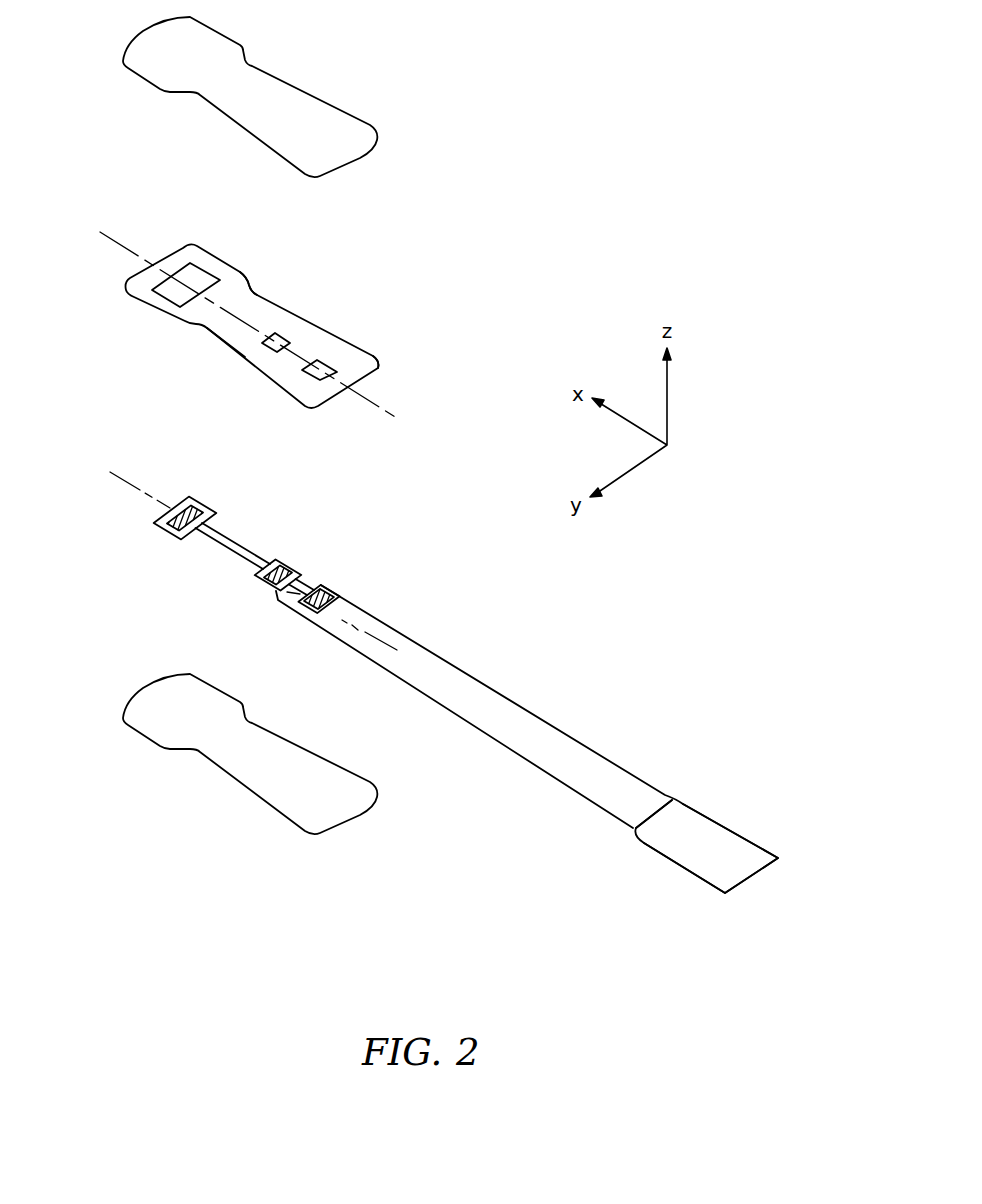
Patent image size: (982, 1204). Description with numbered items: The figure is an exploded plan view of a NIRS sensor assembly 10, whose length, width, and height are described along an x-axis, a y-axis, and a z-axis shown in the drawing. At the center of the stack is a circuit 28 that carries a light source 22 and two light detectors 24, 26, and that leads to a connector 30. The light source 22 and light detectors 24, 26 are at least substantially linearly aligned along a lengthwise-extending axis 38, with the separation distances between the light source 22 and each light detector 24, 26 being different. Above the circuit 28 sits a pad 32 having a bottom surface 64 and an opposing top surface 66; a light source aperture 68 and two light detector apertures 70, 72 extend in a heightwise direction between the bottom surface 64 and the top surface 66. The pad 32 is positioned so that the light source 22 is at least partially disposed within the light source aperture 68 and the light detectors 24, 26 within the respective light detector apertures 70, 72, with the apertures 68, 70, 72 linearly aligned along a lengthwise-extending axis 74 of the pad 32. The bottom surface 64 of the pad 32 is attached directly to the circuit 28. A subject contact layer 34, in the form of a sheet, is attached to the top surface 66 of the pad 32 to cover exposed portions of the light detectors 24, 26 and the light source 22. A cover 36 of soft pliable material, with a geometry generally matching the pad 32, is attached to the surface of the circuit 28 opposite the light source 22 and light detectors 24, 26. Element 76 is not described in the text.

The NIRS sensor assembly 10 is at (535, 130).
The light source 22 is at (327, 593).
The light detector 24 is at (278, 563).
The light detector 26 is at (177, 538).
The circuit 28 is at (538, 767).
The connector 30 is at (708, 818).
The pad 32 is at (308, 322).
The subject contact layer 34 is at (367, 153).
The cover 36 is at (347, 823).
The lengthwise-extending axis 38 is at (120, 482).
The bottom surface 64 is at (228, 348).
The top surface 66 is at (257, 310).
The light source aperture 68 is at (310, 377).
The light detector aperture 70 is at (272, 350).
The light detector aperture 72 is at (157, 298).
The lengthwise-extending axis 74 is at (125, 247).
The end portion of plate 76 is at (367, 365).